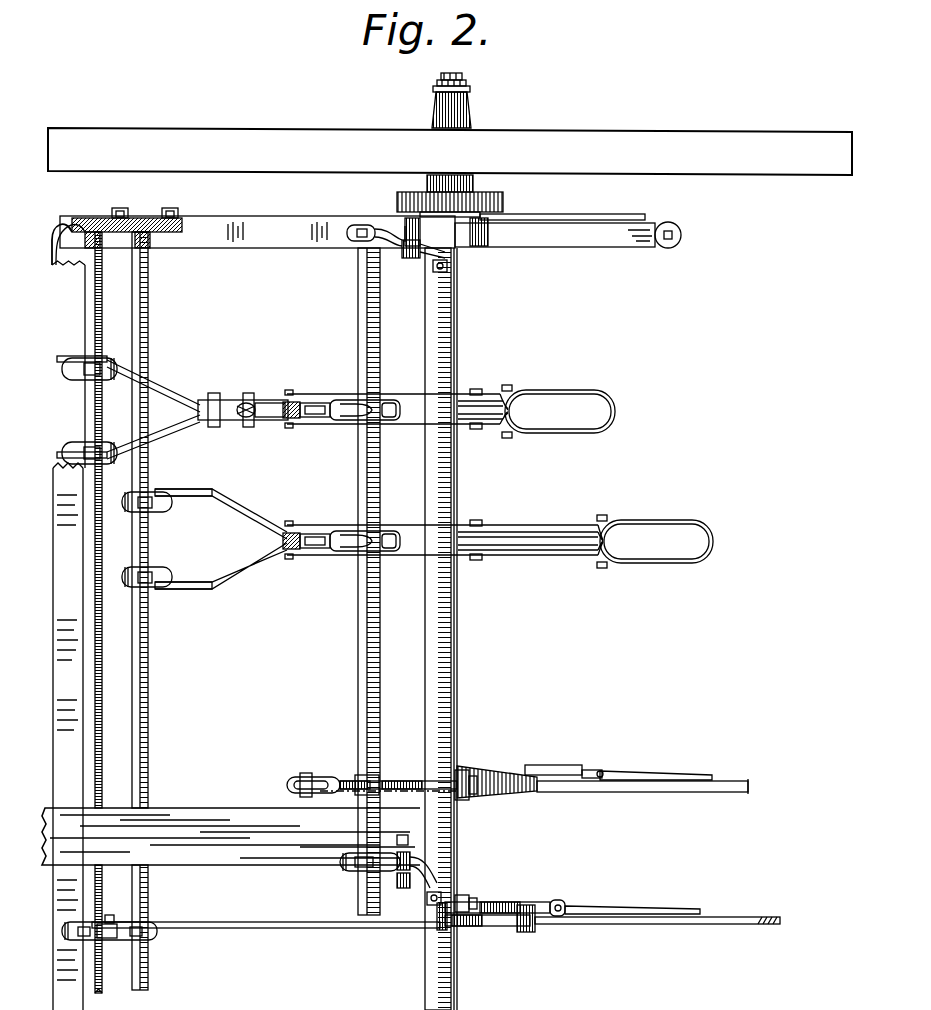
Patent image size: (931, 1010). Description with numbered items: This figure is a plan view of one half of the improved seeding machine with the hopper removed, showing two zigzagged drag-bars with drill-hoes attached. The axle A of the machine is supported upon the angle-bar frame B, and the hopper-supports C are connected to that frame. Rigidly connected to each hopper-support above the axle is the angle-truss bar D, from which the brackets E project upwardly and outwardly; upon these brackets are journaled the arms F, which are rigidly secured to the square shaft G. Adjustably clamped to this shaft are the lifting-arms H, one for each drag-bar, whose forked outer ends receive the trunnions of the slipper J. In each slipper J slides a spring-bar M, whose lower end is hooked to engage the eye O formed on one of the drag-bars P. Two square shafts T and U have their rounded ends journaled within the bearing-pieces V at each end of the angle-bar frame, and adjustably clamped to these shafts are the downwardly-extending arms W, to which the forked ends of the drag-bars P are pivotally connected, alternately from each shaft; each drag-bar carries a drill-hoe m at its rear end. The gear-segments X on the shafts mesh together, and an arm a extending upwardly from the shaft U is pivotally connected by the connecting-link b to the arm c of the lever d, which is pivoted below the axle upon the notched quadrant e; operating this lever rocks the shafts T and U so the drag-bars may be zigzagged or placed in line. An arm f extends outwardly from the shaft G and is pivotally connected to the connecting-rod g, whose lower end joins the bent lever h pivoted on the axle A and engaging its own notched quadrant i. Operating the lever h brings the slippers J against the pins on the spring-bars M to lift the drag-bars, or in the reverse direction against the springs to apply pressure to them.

The axle A is at (460, 308).
The angle-bar frame B is at (243, 247).
The hopper-supports C is at (645, 250).
The angle-truss bar D is at (425, 325).
The brackets E is at (440, 253).
The arms F is at (346, 242).
The bearing-pieces V is at (127, 222).
The downwardly-extending arms W is at (78, 360).
The drag-bars P is at (162, 385).
The spring-bar M is at (270, 405).
The square shaft G is at (358, 355).
The eye O is at (237, 417).
The slipper J is at (285, 416).
The lifting-arms H is at (345, 414).
The drill-hoe m is at (548, 390).
The square shaft T is at (100, 606).
The square shaft U is at (150, 673).
The arm f is at (303, 777).
The connecting-rod g is at (286, 784).
The bent lever h is at (468, 793).
The notched quadrant i is at (515, 766).
The arm a is at (102, 940).
The connecting-link b is at (212, 922).
The gear-segments X is at (103, 938).
The notched quadrant e is at (490, 906).
The arm c is at (433, 928).
The lever d is at (565, 924).